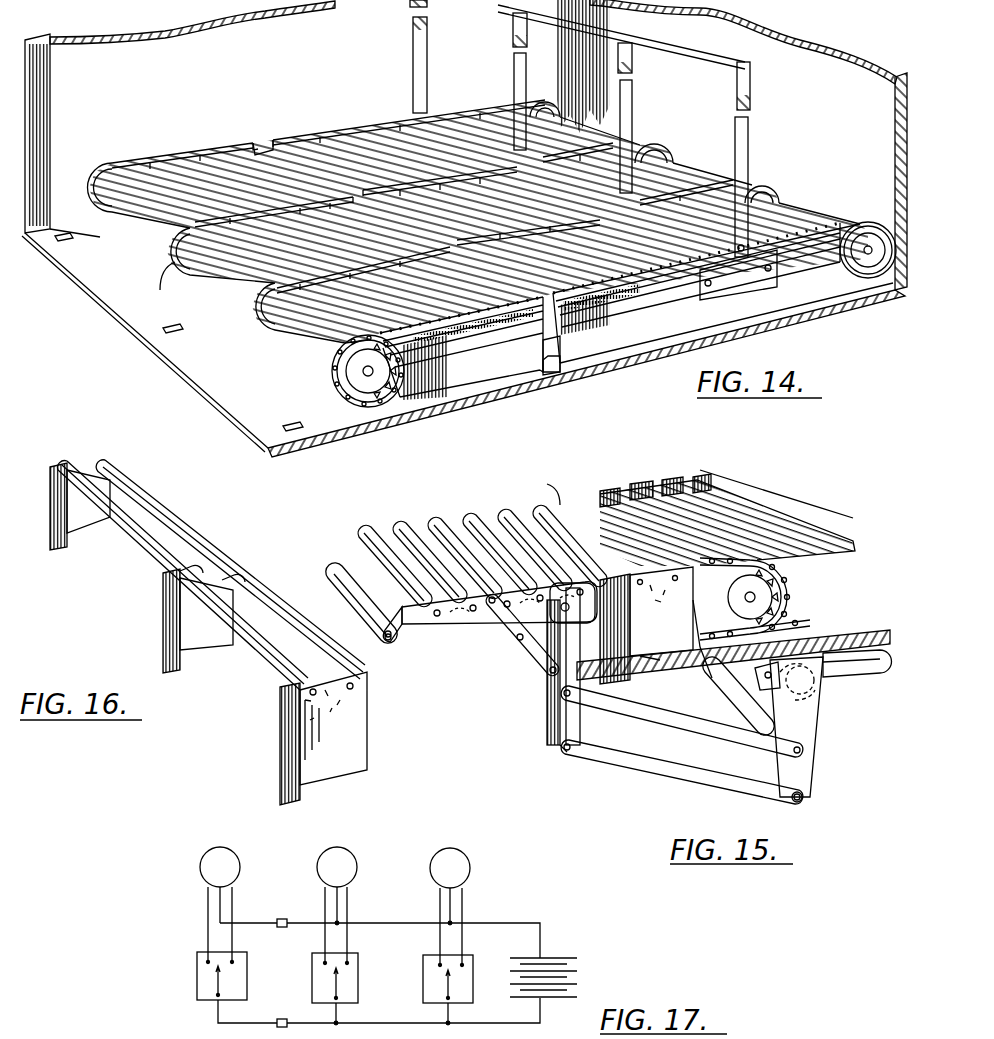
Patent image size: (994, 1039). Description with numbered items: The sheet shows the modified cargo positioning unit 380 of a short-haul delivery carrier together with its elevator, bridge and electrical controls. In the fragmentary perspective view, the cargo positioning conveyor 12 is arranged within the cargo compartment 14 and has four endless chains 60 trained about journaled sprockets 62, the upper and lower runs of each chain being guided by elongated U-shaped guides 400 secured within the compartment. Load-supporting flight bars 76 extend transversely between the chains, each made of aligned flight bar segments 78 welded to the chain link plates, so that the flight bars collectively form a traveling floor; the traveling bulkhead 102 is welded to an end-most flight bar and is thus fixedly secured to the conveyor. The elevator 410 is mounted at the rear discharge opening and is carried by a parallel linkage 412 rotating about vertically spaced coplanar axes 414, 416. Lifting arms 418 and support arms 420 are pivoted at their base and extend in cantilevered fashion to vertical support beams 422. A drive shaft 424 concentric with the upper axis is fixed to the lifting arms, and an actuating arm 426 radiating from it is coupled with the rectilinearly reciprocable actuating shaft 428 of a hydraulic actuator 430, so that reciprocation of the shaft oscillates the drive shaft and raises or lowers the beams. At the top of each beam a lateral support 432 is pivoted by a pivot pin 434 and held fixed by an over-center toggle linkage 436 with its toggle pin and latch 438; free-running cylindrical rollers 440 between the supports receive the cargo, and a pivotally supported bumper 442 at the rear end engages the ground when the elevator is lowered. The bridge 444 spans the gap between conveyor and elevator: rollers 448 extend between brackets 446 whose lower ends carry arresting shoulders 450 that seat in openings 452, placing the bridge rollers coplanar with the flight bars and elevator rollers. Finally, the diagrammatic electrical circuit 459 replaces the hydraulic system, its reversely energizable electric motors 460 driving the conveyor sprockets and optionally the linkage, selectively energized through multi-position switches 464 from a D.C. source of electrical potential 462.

In FIG. 14, the cargo compartment 14 is at (761, 50).
In FIG. 14, the traveling bulkhead 102 is at (753, 82).
In FIG. 14, the cargo positioning conveyor 12 is at (268, 354).
In FIG. 15, the cargo positioning conveyor 12 is at (779, 504).
In FIG. 14, the chain 60 is at (217, 150).
In FIG. 15, the chain 60 is at (755, 599).
In FIG. 14, the flight bar 76 is at (180, 155).
In FIG. 15, the flight bar 76 is at (680, 478).
In FIG. 14, the modified cargo positioning unit 380 is at (246, 133).
In FIG. 14, the flight bar segment 78 is at (255, 345).
In FIG. 14, the sprocket 62 is at (545, 103).
In FIG. 15, the sprocket 62 is at (768, 594).
In FIG. 14, the opening 452 is at (175, 328).
In FIG. 14, the U-shaped guide 400 is at (547, 372).
In FIG. 15, the U-shaped guide 400 is at (833, 613).
In FIG. 16, the bridge 444 is at (210, 690).
In FIG. 15, the bridge 444 is at (700, 476).
In FIG. 16, the bracket 446 is at (177, 604).
In FIG. 15, the bracket 446 is at (660, 563).
In FIG. 16, the roller 448 is at (245, 582).
In FIG. 15, the roller 448 is at (547, 492).
In FIG. 16, the arresting shoulder 450 is at (87, 533).
In FIG. 15, the arresting shoulder 450 is at (665, 665).
In FIG. 15, the roller 440 is at (370, 528).
In FIG. 15, the over-center toggle pin and latch 438 is at (427, 523).
In FIG. 15, the pivot pin 434 is at (490, 598).
In FIG. 15, the bumper 442 is at (334, 582).
In FIG. 15, the lateral support 432 is at (453, 622).
In FIG. 15, the elevator 410 is at (452, 640).
In FIG. 15, the toggle linkage 436 is at (520, 647).
In FIG. 15, the vertical support beam 422 is at (560, 723).
In FIG. 15, the lifting arm 418 is at (690, 718).
In FIG. 15, the support arm 420 is at (670, 767).
In FIG. 15, the parallel linkage 412 is at (637, 783).
In FIG. 15, the axis 414 is at (817, 727).
In FIG. 15, the actuating shaft 428 is at (823, 697).
In FIG. 15, the axis 416 is at (803, 795).
In FIG. 15, the hydraulic actuator 430 is at (873, 640).
In FIG. 15, the actuating arm 426 is at (700, 647).
In FIG. 15, the drive shaft 424 is at (710, 680).
In FIG. 17, the electric motor 460 is at (240, 855).
In FIG. 17, the multi-position switch 464 is at (197, 963).
In FIG. 17, the electrical circuit 459 is at (507, 924).
In FIG. 17, the D.C. source of electrical potential 462 is at (567, 957).